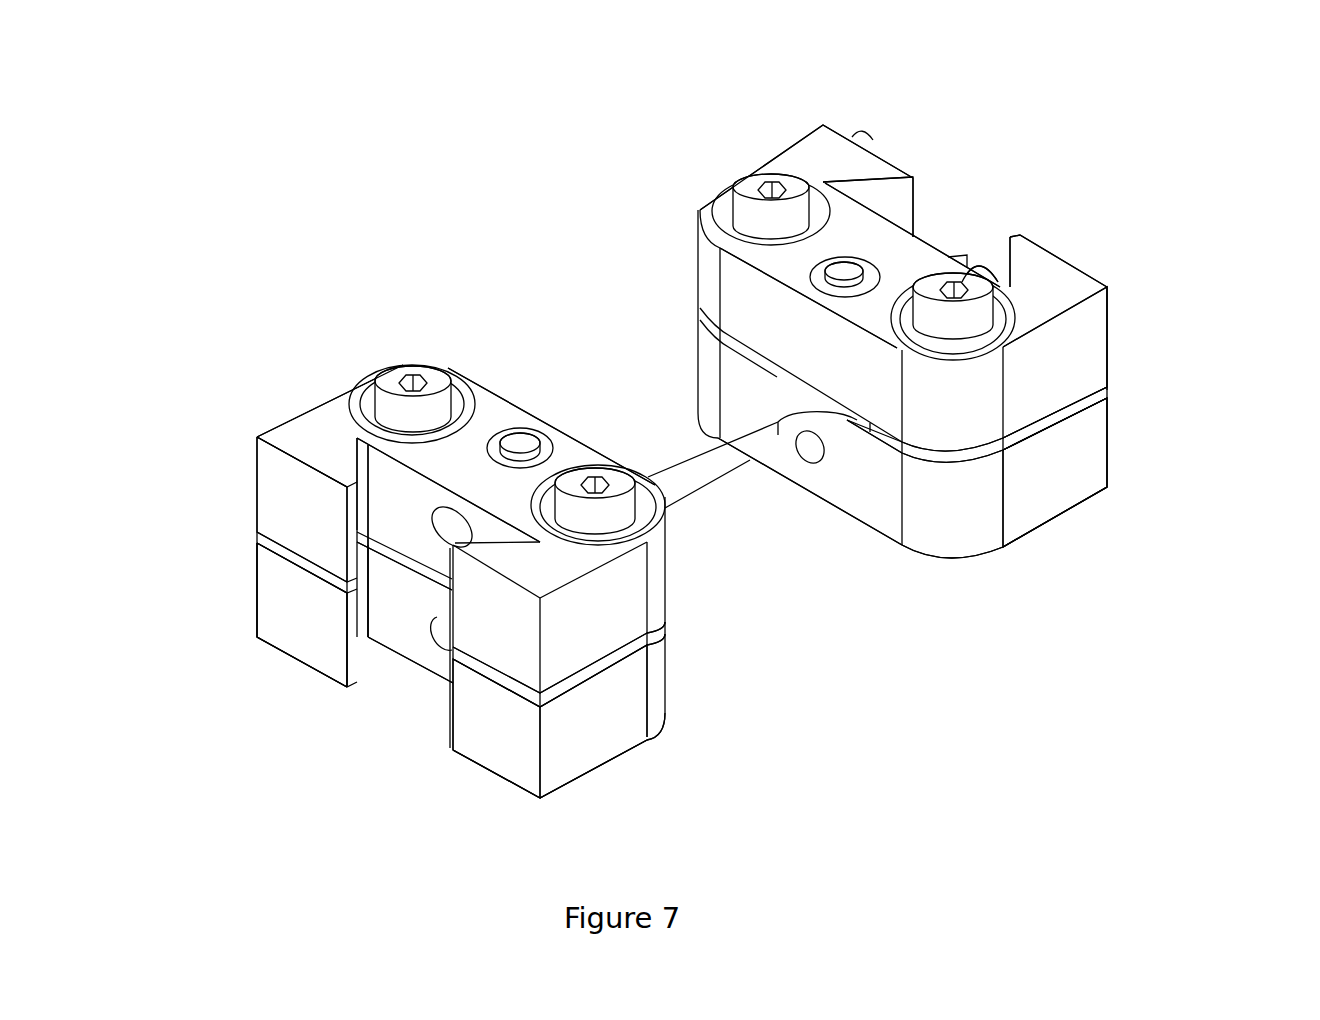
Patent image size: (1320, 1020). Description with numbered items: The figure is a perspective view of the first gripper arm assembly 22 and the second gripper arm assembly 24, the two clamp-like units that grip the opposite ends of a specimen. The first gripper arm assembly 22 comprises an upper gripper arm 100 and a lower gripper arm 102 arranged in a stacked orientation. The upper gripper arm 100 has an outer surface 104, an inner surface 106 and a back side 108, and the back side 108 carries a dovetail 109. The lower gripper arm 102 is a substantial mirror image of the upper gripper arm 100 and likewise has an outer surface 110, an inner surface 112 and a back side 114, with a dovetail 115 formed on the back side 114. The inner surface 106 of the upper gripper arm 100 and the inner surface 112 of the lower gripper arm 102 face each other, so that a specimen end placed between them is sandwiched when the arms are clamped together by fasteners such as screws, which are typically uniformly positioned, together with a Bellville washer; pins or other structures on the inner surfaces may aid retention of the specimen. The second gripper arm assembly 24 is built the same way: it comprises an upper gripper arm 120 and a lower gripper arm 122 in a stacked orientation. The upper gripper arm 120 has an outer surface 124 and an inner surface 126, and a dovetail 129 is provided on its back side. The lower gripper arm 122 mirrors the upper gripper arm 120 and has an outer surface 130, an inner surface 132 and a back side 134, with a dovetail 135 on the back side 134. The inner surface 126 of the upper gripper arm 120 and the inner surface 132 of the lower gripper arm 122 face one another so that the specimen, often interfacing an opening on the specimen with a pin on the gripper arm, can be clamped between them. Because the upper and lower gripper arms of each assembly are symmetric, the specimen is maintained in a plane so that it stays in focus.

The first gripper arm assembly 22 is at (198, 616).
The second gripper arm assembly 24 is at (1122, 256).
The upper gripper arm 100 is at (245, 478).
The lower gripper arm 102 is at (568, 783).
The outer surface 104 is at (325, 398).
The inner surface 106 is at (619, 664).
The back side 108 is at (300, 513).
The dovetail 109 is at (399, 458).
The outer surface 110 is at (620, 762).
The inner surface 112 is at (510, 690).
The back side 114 is at (307, 646).
The dovetail 115 is at (408, 652).
The upper gripper arm 120 is at (860, 118).
The lower gripper arm 122 is at (1072, 512).
The outer surface 124 is at (810, 146).
The inner surface 126 is at (1103, 392).
The dovetail 129 is at (890, 197).
The outer surface 130 is at (965, 570).
The inner surface 132 is at (1062, 421).
The back side 134 is at (1113, 463).
The dovetail 135 is at (993, 250).